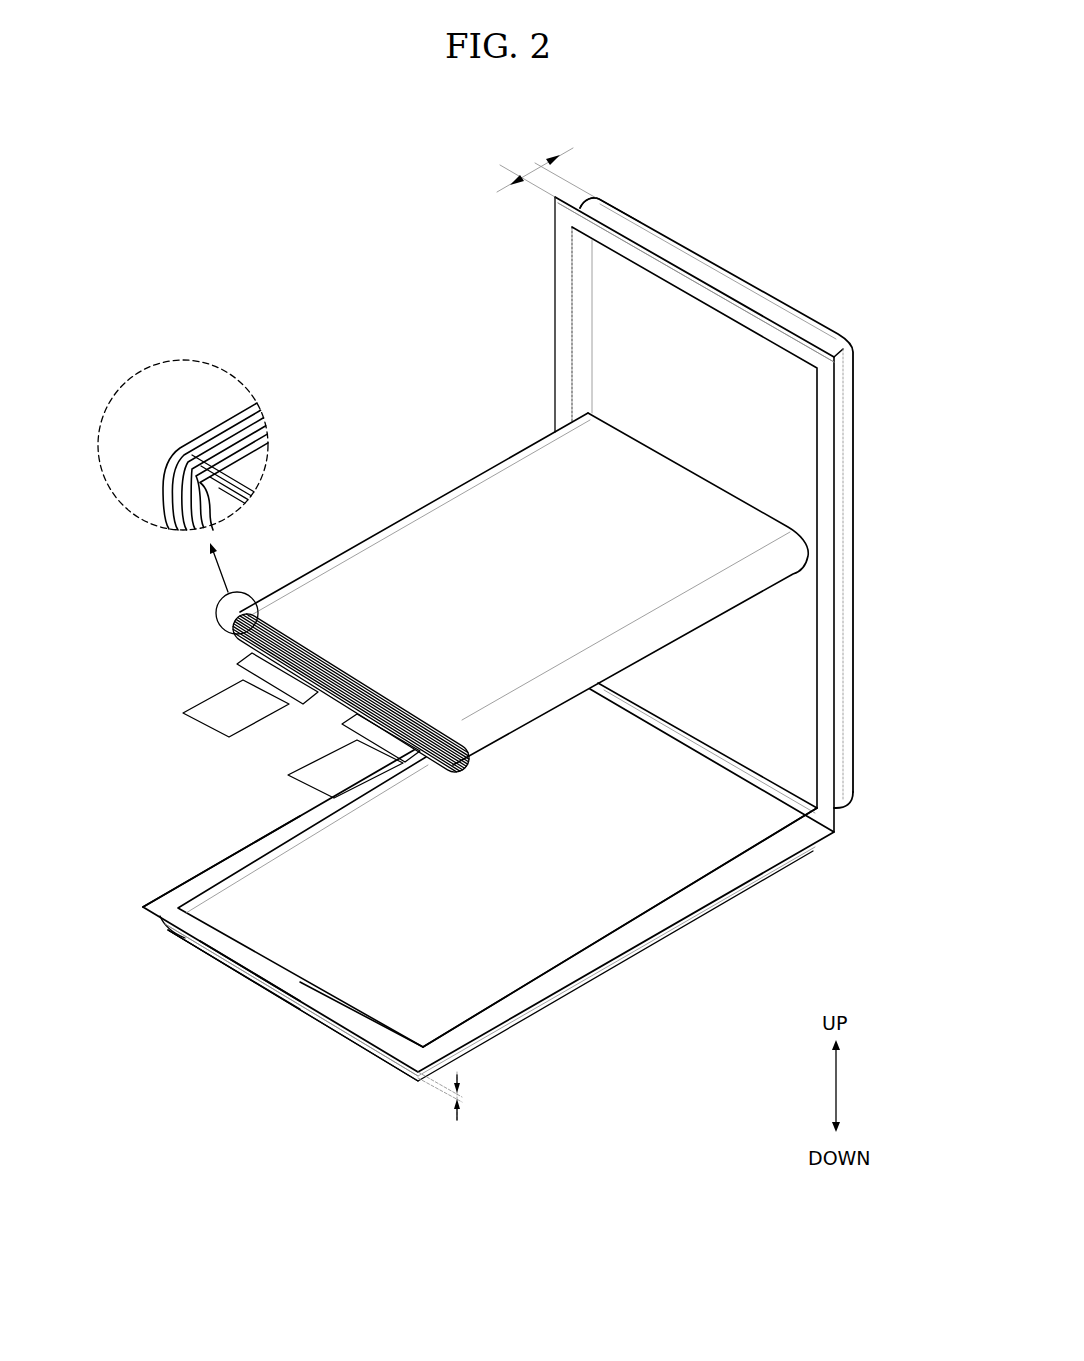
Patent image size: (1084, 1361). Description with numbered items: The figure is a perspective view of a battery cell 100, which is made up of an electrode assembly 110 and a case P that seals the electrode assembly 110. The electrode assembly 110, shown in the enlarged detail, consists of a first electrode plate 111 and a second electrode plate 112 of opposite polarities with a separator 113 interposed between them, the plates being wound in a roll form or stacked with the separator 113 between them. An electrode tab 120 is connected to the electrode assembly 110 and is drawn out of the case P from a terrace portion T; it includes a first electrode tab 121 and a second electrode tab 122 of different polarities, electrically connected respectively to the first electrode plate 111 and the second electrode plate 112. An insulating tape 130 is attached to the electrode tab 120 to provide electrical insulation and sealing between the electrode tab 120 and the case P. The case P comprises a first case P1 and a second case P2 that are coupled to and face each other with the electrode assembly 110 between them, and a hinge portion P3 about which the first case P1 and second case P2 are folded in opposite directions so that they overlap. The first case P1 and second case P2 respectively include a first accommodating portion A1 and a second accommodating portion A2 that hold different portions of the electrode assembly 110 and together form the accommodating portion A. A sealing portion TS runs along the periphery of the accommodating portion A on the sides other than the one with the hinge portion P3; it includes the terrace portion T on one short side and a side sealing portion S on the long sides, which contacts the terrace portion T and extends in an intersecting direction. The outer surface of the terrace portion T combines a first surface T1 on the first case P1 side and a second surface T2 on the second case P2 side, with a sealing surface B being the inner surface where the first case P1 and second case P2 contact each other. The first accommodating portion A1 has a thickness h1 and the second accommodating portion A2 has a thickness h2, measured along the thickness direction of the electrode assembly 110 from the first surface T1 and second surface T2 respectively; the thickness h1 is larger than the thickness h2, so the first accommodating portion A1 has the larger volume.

The battery cell 100 is at (858, 190).
The electrode assembly 110 is at (378, 497).
The first electrode plate 111 is at (168, 466).
The second electrode plate 112 is at (178, 514).
The separator 113 is at (178, 492).
The electrode tab 120 is at (233, 837).
The first electrode tab 121 is at (305, 787).
The second electrode tab 122 is at (193, 722).
The insulating tape 130 is at (238, 663).
The case P is at (950, 843).
The first case P1 is at (855, 745).
The second case P2 is at (745, 892).
The hinge portion P3 is at (833, 835).
The first accommodating portion A1 is at (732, 280).
The second accommodating portion A2 is at (622, 968).
The terrace portion T is at (718, 210).
The first surface T1 is at (645, 247).
The second surface T2 is at (237, 970).
The side sealing portion S is at (195, 882).
The sealing portion TS is at (100, 866).
The thickness of first accommodating portion h1 is at (547, 173).
The thickness of second accommodating portion h2 is at (453, 1097).
The accommodating portion A is at (375, 948).
The sealing surface B is at (295, 985).